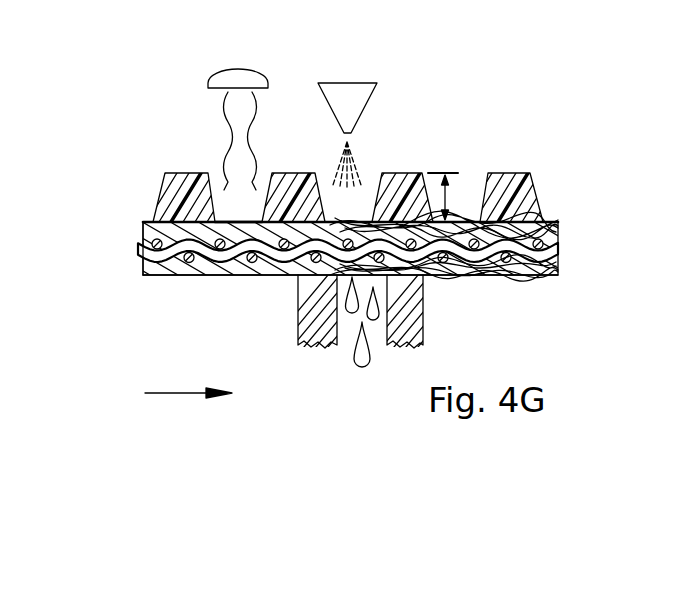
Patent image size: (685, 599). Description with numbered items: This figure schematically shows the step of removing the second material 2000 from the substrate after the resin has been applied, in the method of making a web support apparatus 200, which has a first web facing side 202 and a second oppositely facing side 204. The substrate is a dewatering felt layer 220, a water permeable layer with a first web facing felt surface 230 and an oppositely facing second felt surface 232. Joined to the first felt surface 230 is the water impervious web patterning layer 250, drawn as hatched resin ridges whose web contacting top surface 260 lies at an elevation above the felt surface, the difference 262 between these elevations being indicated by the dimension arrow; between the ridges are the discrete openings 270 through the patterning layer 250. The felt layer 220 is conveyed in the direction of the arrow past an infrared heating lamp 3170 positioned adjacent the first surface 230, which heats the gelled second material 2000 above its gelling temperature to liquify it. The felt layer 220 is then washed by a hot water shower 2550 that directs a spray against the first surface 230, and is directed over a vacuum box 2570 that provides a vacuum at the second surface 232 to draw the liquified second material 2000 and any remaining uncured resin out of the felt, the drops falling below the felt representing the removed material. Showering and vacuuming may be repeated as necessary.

The web support apparatus 200 is at (370, 207).
The first web facing side 202 is at (556, 159).
The second oppositely facing side 204 is at (455, 296).
The dewatering felt layer 220 is at (580, 255).
The first web facing felt surface 230 is at (452, 220).
The second felt surface 232 is at (508, 268).
The web patterning layer 250 is at (562, 207).
The web contacting top surface 260 is at (172, 171).
The difference between first and second elevations 262 is at (447, 196).
The discrete openings 270 is at (215, 171).
The second material 2000 is at (143, 234).
The hot water shower 2550 is at (347, 88).
The vacuum box 2570 is at (300, 334).
The infrared heating lamp 3170 is at (230, 72).